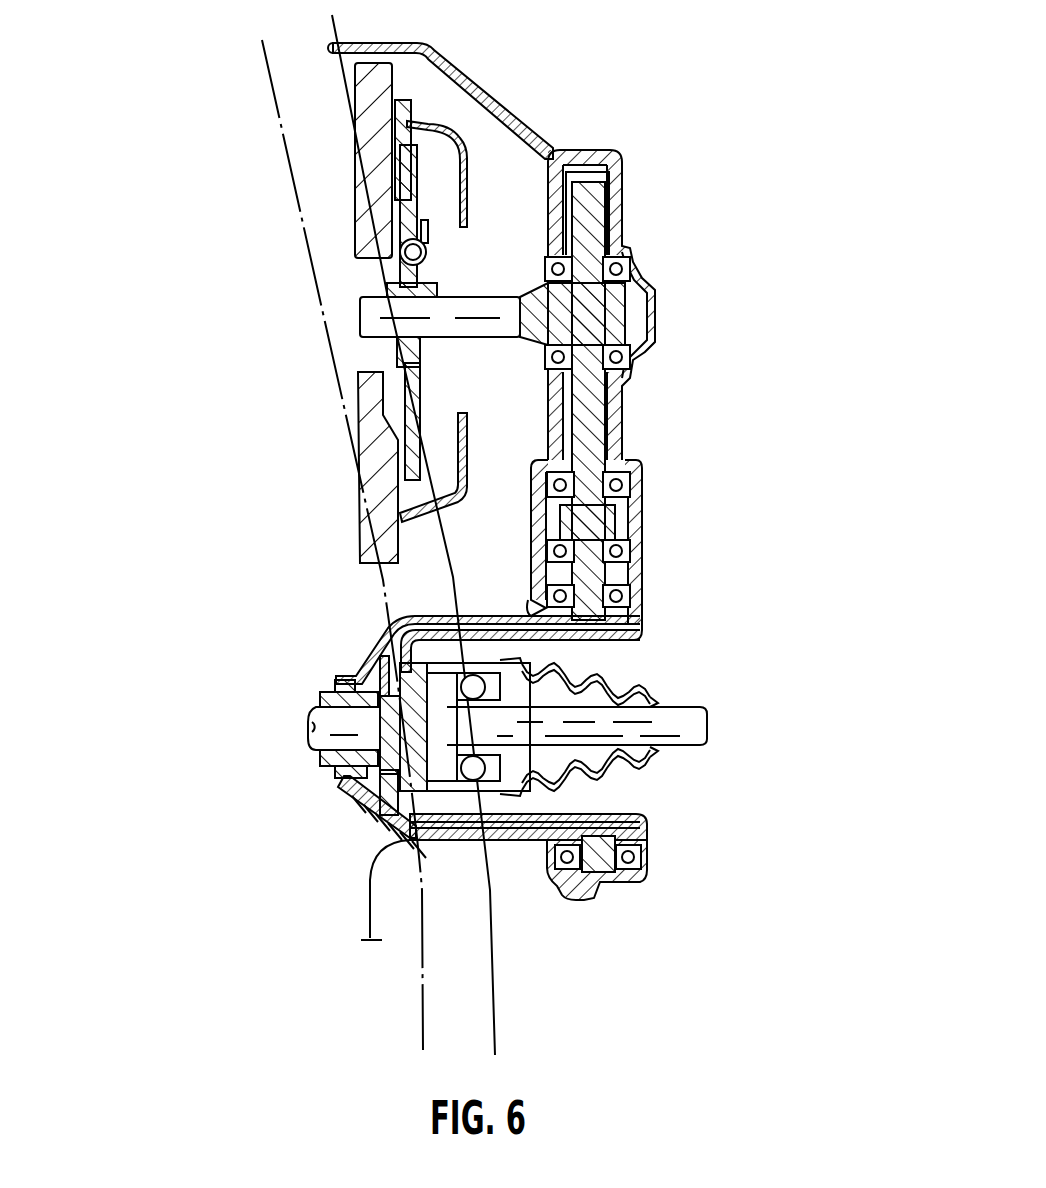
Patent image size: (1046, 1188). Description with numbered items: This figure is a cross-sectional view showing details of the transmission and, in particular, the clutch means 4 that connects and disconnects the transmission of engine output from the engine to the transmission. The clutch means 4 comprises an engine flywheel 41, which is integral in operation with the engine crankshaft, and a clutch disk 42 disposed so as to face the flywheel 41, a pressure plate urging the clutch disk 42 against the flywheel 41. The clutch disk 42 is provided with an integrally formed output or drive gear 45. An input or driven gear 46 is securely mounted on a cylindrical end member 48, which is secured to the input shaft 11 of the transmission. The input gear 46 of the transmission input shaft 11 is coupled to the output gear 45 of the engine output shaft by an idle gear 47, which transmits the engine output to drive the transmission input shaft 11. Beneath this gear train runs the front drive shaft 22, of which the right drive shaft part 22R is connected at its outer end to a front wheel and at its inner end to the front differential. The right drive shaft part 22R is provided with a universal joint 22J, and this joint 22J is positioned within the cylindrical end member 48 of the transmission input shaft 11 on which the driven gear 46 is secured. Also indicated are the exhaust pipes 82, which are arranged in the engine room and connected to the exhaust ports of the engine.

The clutch means 4 is at (452, 108).
The input shaft 11 is at (322, 690).
The front drive shaft 22 is at (333, 723).
The universal joint 22J is at (468, 800).
The right drive shaft part 22R is at (686, 757).
The engine flywheel 41 is at (353, 207).
The clutch disk 42 is at (420, 174).
The output gear 45 is at (595, 412).
The input gear 46 is at (628, 458).
The idle gear 47 is at (617, 577).
The cylindrical end member 48 is at (478, 628).
The exhaust pipes 82 is at (497, 945).